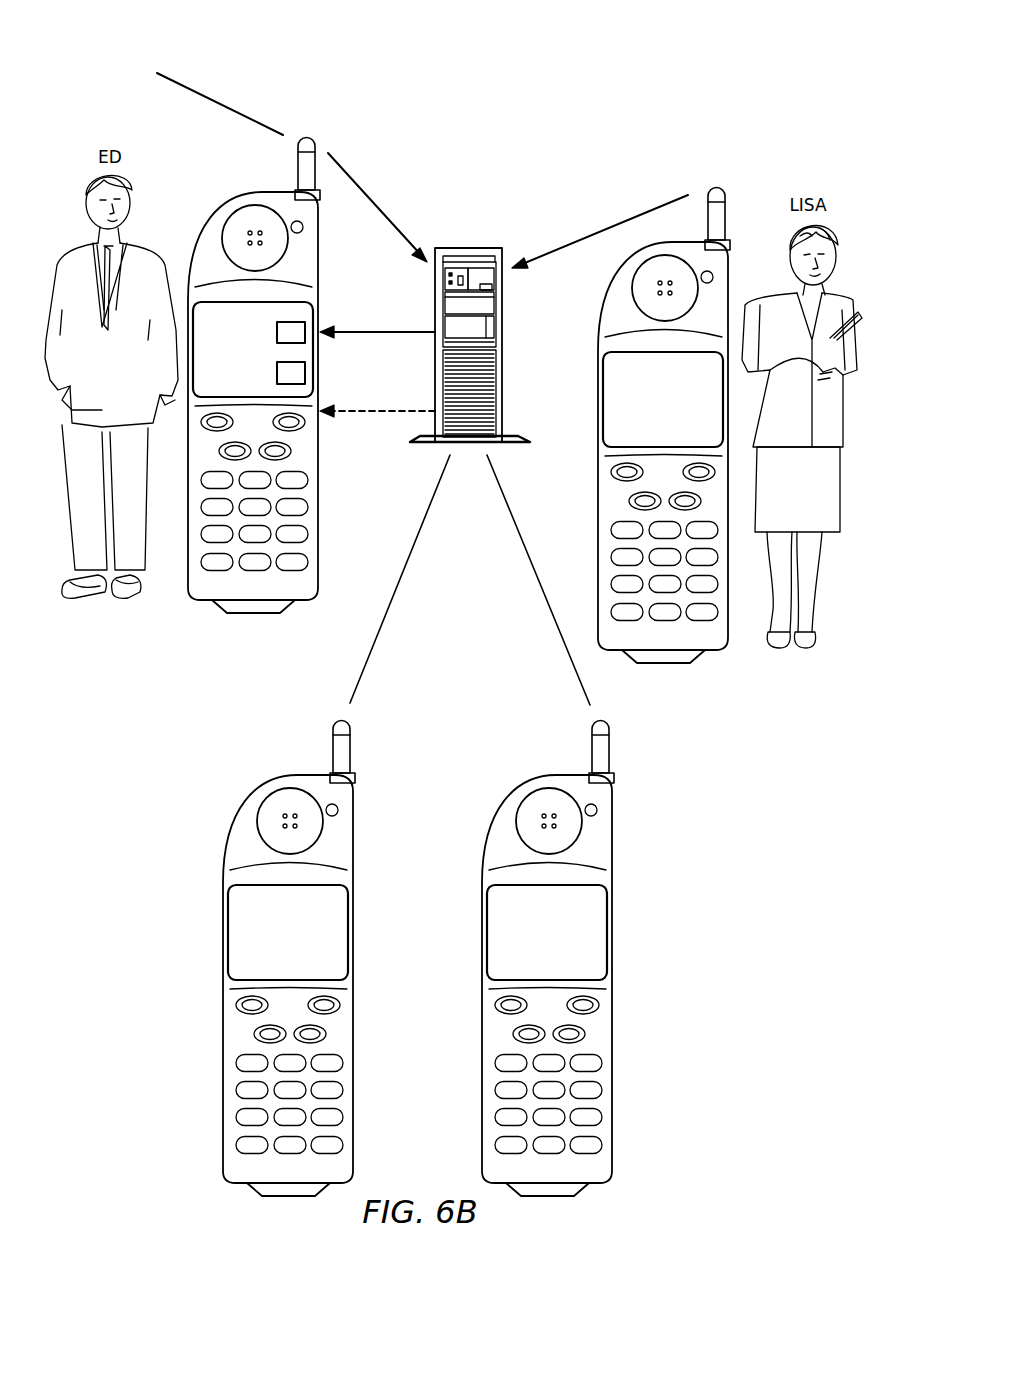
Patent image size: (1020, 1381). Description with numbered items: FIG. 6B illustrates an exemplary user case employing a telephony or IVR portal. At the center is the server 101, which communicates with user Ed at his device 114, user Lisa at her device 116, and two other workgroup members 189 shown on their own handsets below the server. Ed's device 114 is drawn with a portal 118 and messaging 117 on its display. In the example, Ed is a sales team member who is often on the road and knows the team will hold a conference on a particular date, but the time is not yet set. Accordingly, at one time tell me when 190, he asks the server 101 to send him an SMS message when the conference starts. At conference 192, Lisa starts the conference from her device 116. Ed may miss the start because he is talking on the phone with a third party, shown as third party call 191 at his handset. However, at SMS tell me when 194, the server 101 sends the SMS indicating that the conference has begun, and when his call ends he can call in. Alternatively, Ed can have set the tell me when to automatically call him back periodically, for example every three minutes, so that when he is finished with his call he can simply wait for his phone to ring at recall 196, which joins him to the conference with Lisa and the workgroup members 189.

The server 101 is at (470, 247).
The device 114 is at (254, 401).
The device 116 is at (665, 663).
The messaging 117 is at (277, 332).
The portal 118 is at (277, 372).
The workgroup members 189 is at (290, 775).
The one time tell me when setting 190 is at (370, 200).
The third party call 191 is at (215, 100).
The conference start 192 is at (618, 218).
The SMS tell me when message 194 is at (380, 336).
The recall 196 is at (380, 415).